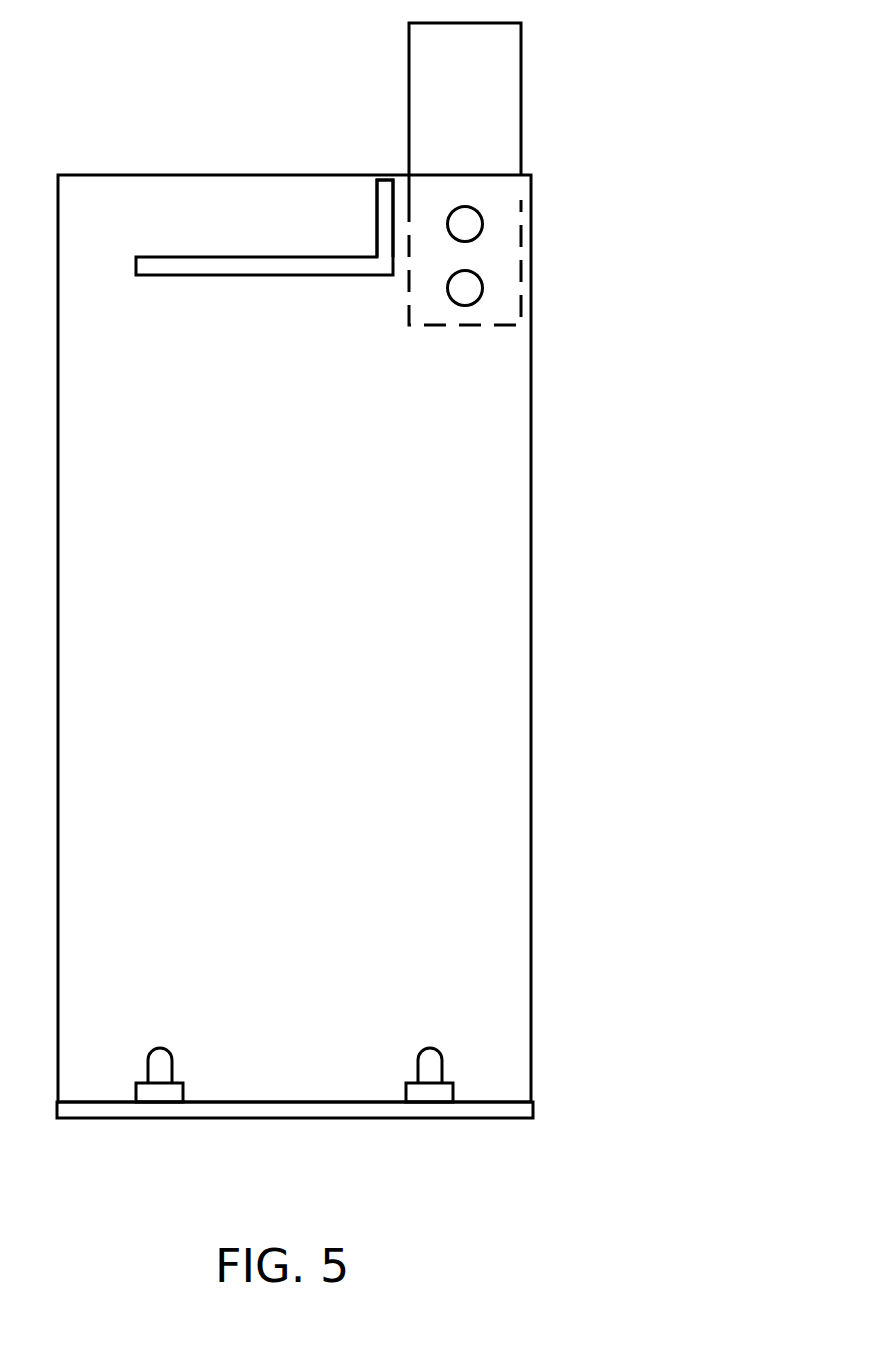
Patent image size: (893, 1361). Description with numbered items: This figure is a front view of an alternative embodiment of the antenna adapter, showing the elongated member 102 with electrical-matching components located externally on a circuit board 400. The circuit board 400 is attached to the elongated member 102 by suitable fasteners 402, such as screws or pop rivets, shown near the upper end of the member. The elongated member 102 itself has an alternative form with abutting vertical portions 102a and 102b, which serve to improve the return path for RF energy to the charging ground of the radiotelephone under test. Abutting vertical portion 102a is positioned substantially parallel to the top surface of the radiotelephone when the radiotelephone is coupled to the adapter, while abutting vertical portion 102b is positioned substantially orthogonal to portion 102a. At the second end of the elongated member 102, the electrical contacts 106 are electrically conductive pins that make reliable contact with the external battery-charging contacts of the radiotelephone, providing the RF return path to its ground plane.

The elongated member 102 is at (393, 683).
The abutting vertical portion 102a is at (230, 257).
The abutting vertical portion 102b is at (380, 212).
The circuit board 400 is at (521, 88).
The fastener 402 is at (468, 225).
The electrical contact 106 is at (172, 1057).